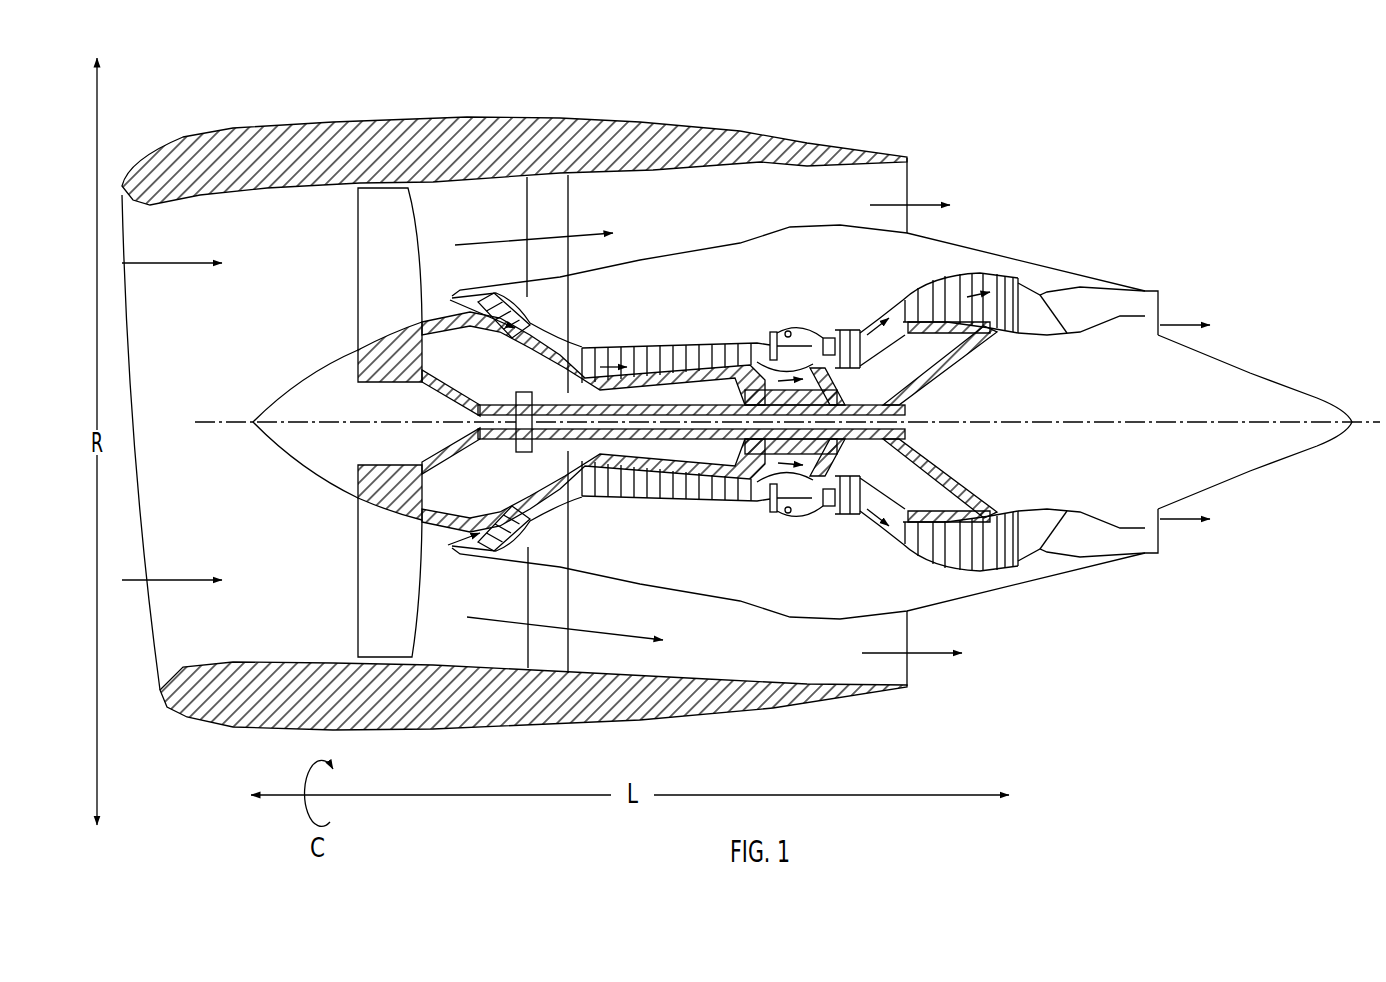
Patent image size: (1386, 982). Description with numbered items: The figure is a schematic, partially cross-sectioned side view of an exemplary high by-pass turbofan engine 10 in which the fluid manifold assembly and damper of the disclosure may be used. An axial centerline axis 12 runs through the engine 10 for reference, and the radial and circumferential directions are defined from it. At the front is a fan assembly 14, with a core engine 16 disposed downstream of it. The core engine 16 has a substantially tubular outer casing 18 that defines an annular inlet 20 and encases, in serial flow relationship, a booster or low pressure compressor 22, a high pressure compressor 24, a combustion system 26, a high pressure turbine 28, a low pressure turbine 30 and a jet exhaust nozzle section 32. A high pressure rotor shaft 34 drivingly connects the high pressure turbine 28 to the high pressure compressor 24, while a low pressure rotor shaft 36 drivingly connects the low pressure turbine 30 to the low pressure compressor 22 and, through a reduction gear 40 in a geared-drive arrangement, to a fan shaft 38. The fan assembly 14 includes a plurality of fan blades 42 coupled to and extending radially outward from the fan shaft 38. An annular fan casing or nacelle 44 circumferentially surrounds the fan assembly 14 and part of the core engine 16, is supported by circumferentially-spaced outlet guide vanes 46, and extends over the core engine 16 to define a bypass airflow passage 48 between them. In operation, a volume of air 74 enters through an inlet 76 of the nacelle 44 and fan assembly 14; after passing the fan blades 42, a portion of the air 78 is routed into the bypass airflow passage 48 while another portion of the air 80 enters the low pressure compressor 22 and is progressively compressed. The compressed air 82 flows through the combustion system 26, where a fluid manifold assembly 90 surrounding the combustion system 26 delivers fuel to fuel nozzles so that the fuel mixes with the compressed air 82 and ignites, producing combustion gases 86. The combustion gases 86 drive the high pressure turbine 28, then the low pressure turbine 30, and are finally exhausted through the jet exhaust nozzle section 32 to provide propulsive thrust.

The turbofan engine 10 is at (1058, 108).
The axial centerline axis 12 is at (1103, 420).
The fan assembly 14 is at (441, 198).
The core engine 16 is at (788, 226).
The outer casing 18 is at (737, 605).
The annular inlet 20 is at (450, 550).
The low pressure compressor 22 is at (530, 503).
The high pressure compressor 24 is at (603, 495).
The combustion system 26 is at (787, 514).
The high pressure turbine 28 is at (868, 503).
The low pressure turbine 30 is at (992, 580).
The jet exhaust nozzle section 32 is at (1072, 550).
The high pressure rotor shaft 34 is at (813, 378).
The low pressure rotor shaft 36 is at (950, 370).
The fan shaft 38 is at (422, 385).
The reduction gear 40 is at (524, 389).
The fan blades 42 is at (377, 227).
The nacelle 44 is at (360, 117).
The outlet guide vanes 46 is at (572, 212).
The bypass airflow passage 48 is at (709, 230).
The air 74 is at (190, 260).
The inlet 76 is at (218, 613).
The bypass air 78 is at (513, 238).
The core air 80 is at (447, 303).
The compressed air 82 is at (595, 342).
The combustion gases 86 is at (841, 332).
The fluid manifold assembly 90 is at (788, 330).